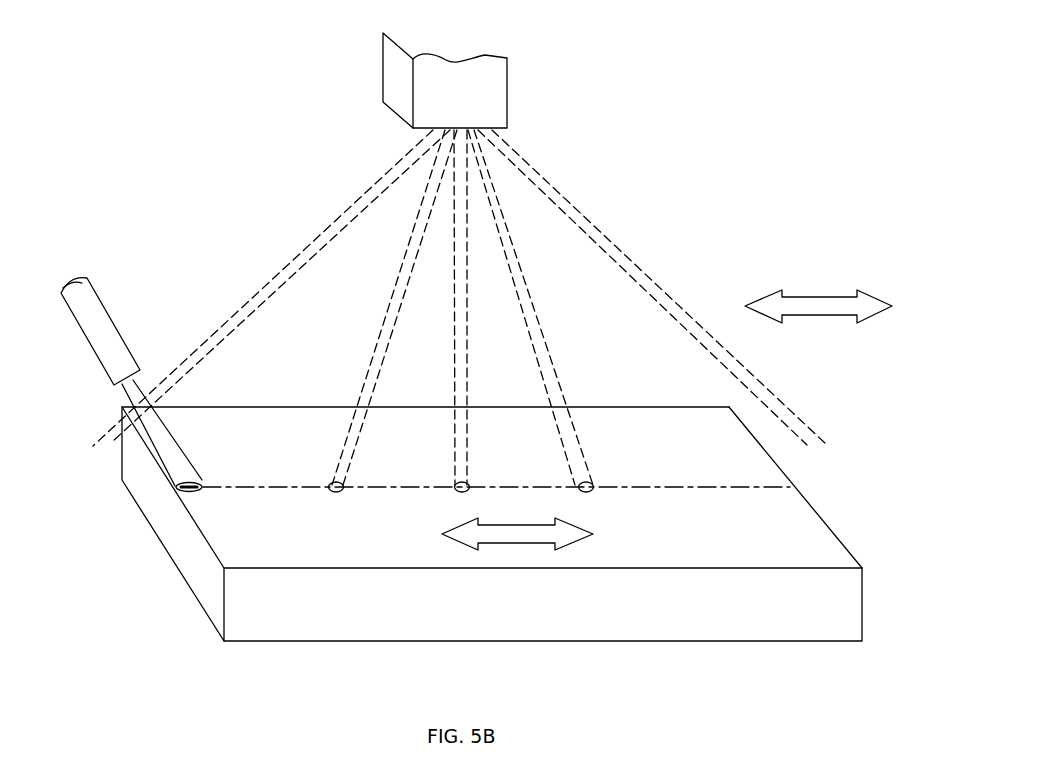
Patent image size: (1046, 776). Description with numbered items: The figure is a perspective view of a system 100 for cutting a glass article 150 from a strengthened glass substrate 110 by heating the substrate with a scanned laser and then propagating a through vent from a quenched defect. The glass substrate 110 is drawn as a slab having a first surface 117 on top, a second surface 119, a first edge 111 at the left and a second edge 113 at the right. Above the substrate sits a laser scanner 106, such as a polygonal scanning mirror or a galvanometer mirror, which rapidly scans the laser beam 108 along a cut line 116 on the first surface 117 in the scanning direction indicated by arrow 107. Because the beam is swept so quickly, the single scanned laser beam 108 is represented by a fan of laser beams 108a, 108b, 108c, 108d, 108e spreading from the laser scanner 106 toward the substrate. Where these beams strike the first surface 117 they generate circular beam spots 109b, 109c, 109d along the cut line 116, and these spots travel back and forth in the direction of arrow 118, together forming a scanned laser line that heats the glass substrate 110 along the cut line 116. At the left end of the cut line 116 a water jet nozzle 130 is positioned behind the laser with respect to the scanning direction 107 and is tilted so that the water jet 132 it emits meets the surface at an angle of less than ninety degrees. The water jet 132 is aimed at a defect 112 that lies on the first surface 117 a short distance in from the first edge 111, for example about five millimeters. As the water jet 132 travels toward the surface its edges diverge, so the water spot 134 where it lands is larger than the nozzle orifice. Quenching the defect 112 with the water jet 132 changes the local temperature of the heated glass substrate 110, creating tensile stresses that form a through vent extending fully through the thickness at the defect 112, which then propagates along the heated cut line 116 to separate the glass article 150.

The system 100 is at (762, 100).
The laser scanner 106 is at (508, 101).
The arrow 107 is at (822, 297).
The laser beam 108 is at (268, 252).
The laser beam 108a is at (238, 310).
The laser beam 108b is at (377, 346).
The laser beam 108c is at (452, 428).
The laser beam 108d is at (538, 348).
The laser beam 108e is at (647, 256).
The beam spot 109b is at (340, 493).
The beam spot 109c is at (470, 486).
The beam spot 109d is at (592, 485).
The glass substrate 110 is at (872, 620).
The first edge 111 is at (183, 568).
The defect 112 is at (192, 483).
The second edge 113 is at (822, 519).
The cut line 116 is at (698, 486).
The first surface 117 is at (266, 556).
The arrow 118 is at (596, 534).
The second surface 119 is at (756, 642).
The water jet nozzle 130 is at (101, 303).
The water jet 132 is at (172, 432).
The water spot 134 is at (200, 492).
The glass article 150 is at (820, 550).